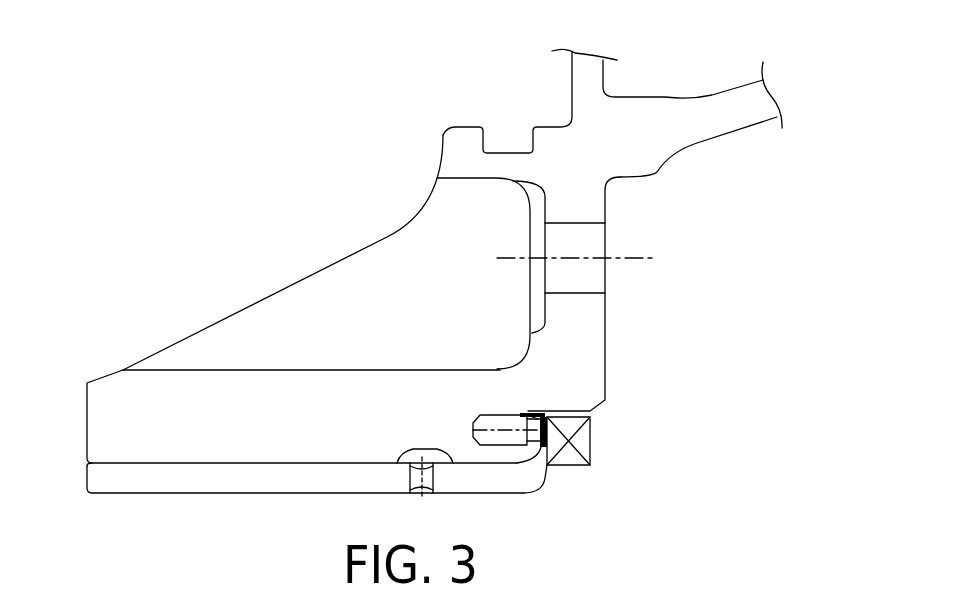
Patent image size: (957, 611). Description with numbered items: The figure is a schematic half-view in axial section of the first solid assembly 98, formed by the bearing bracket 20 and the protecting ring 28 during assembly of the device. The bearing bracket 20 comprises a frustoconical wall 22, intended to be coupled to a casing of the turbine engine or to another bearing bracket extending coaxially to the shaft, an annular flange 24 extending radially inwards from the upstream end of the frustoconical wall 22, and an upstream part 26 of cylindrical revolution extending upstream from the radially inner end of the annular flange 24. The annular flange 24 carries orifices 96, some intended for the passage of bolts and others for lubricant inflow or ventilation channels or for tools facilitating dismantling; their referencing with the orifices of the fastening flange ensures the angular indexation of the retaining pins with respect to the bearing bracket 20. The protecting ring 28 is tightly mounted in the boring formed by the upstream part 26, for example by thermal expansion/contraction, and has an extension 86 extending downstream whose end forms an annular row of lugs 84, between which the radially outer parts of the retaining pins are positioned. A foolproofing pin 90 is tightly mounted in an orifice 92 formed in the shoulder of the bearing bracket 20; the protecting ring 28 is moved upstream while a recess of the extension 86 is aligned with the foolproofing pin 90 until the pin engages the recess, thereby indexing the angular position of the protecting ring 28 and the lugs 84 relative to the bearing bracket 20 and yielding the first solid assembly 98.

The first solid assembly 98 is at (301, 161).
The frustoconical wall 22 is at (728, 110).
The bearing bracket 20 is at (199, 365).
The orifices of the annular flange 96 is at (597, 224).
The annular flange 24 is at (570, 308).
The foolproofing pin 90 is at (513, 413).
The upstream part 26 is at (132, 422).
The protecting ring 28 is at (118, 483).
The orifice 92 is at (478, 418).
The lugs 84 is at (590, 442).
The extension 86 is at (538, 453).